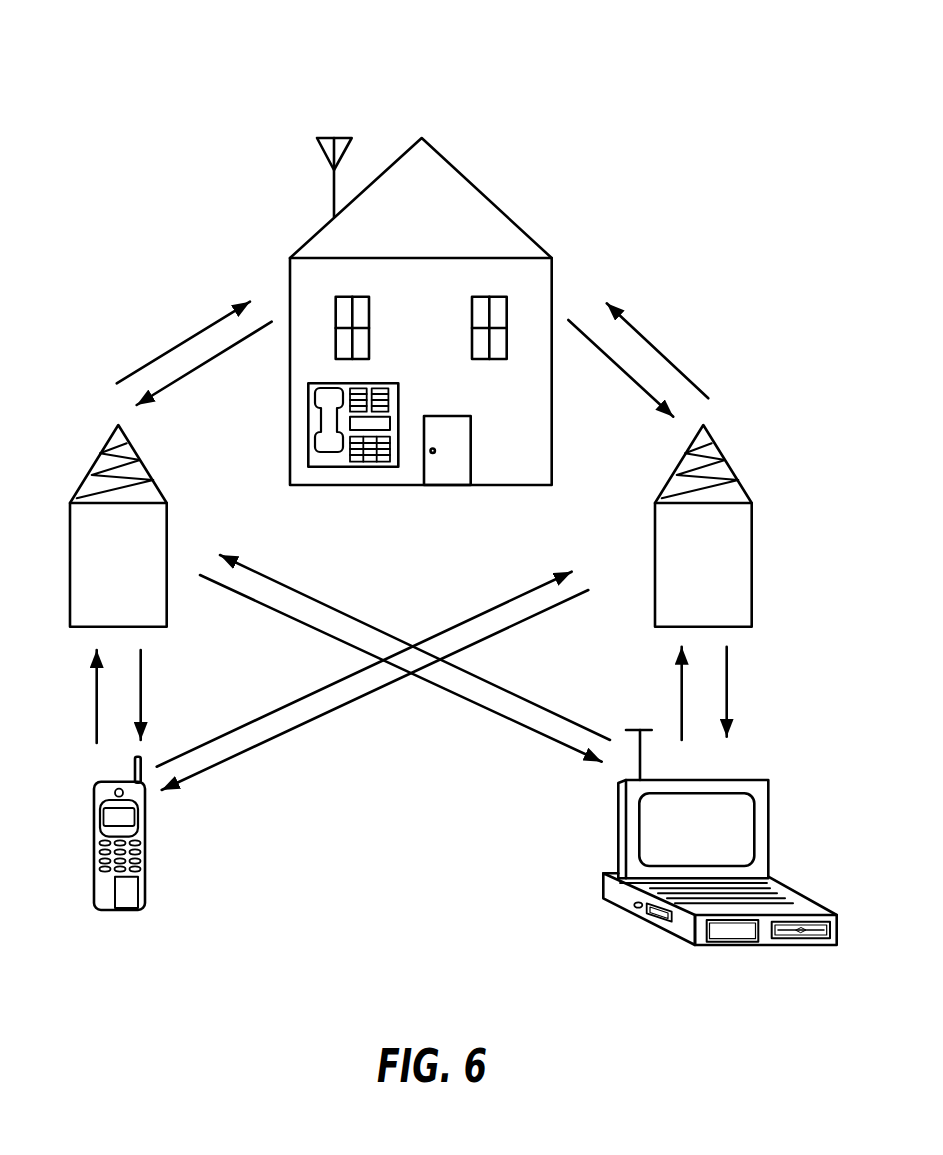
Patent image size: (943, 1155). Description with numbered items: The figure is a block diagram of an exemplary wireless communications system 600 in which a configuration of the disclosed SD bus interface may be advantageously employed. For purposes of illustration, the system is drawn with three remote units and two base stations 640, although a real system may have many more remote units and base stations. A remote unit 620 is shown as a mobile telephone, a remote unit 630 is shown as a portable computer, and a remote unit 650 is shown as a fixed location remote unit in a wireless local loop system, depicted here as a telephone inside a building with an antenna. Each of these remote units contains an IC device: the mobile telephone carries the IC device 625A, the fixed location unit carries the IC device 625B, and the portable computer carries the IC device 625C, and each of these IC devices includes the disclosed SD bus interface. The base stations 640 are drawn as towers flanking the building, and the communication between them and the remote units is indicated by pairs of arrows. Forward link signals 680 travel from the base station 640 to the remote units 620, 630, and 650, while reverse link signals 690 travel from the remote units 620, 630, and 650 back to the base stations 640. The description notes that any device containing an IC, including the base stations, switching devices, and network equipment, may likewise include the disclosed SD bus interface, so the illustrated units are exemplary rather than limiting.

The wireless communications system 600 is at (108, 47).
The remote unit 620 is at (88, 856).
The IC device 625A is at (128, 897).
The IC device 625B is at (380, 471).
The IC device 625C is at (740, 932).
The remote unit 630 is at (719, 860).
The base station 640 is at (95, 460).
The remote unit 650 is at (326, 454).
The forward link signals 680 is at (187, 337).
The reverse link signals 690 is at (192, 373).